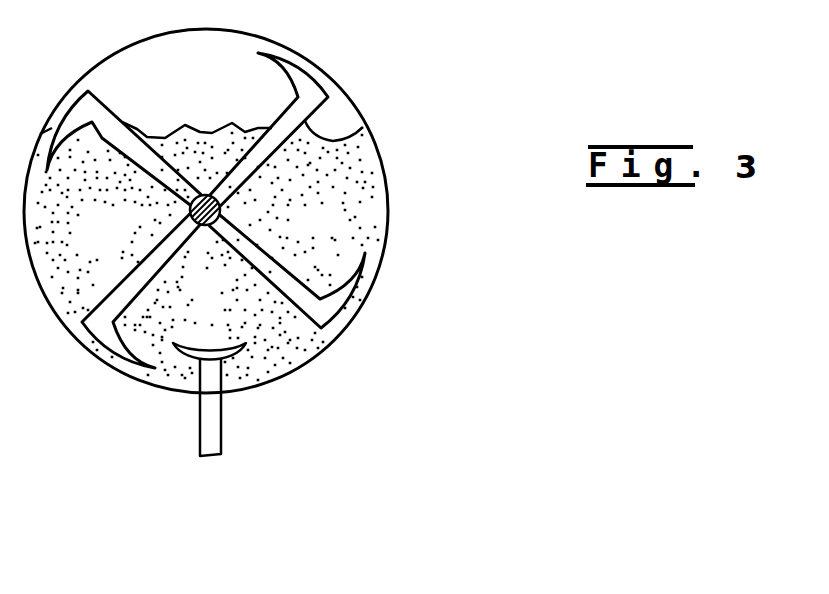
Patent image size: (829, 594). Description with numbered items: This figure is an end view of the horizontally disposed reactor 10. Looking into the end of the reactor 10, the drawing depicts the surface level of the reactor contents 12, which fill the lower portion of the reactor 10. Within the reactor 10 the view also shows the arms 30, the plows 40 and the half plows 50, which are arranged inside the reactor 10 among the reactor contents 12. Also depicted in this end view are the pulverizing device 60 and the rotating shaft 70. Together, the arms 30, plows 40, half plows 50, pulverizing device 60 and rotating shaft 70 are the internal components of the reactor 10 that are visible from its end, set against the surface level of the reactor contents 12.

The reactor 10 is at (384, 171).
The reactor contents 12 is at (246, 110).
The arms 30 is at (112, 272).
The plows 40 is at (90, 90).
The half plows 50 is at (333, 263).
The pulverizing device 60 is at (208, 334).
The rotating shaft 70 is at (222, 410).